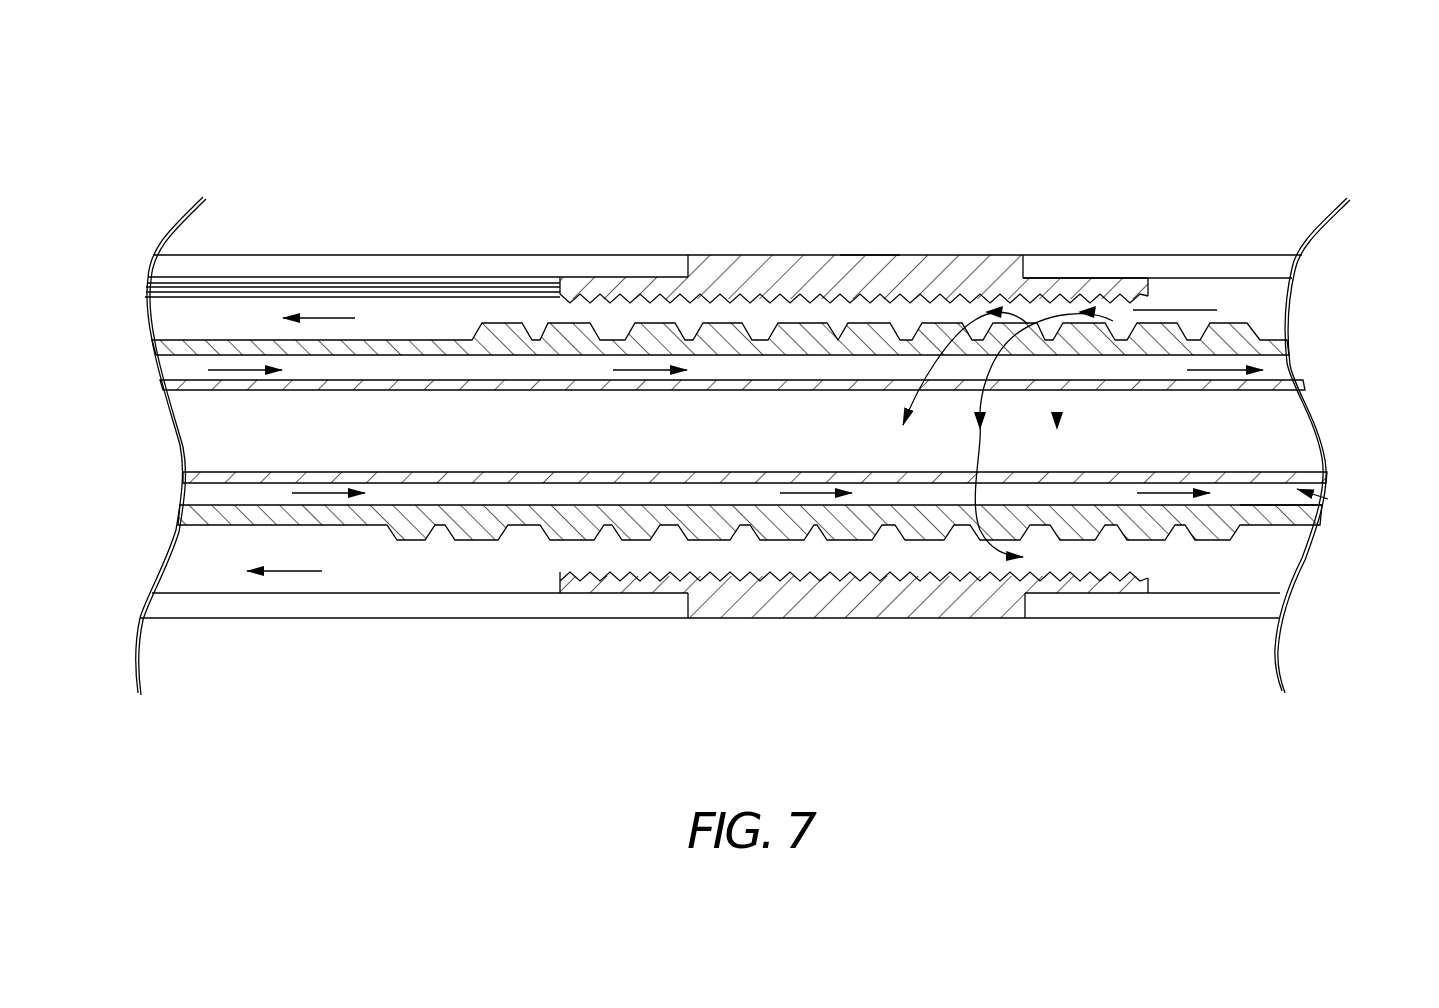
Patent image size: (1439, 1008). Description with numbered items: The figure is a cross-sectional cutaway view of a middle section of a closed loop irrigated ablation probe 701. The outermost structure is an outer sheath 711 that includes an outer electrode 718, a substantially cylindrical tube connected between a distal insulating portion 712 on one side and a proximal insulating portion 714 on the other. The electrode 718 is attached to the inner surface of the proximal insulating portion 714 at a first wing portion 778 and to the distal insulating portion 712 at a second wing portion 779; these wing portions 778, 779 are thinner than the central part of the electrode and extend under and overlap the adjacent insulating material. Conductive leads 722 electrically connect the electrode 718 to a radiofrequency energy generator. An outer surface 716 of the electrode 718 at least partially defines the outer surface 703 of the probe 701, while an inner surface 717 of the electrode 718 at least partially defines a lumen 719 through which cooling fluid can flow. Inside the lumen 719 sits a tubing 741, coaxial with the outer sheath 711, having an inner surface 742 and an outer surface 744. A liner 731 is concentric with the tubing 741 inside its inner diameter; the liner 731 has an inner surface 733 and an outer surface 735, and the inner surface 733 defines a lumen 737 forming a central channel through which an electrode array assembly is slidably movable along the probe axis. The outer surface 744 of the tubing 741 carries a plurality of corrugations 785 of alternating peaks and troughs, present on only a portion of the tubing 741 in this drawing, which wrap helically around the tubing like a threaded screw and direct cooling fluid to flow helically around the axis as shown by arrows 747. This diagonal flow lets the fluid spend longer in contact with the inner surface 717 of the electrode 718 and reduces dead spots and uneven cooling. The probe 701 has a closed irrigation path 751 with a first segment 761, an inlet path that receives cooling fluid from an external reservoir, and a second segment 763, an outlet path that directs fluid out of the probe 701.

The ablation probe 701 is at (763, 155).
The outer surface 703 is at (700, 222).
The outer sheath 711 is at (492, 268).
The distal insulating portion 712 is at (1257, 267).
The proximal insulating portion 714 is at (327, 270).
The outer surface 716 is at (868, 253).
The inner surface 717 is at (822, 302).
The outer electrode 718 is at (955, 270).
The lumen 719 is at (407, 318).
The conductive leads 722 is at (242, 288).
The liner 731 is at (1268, 477).
The inner surface 733 is at (1317, 467).
The outer surface 735 is at (1312, 503).
The lumen 737 is at (1287, 417).
The tubing 741 is at (472, 530).
The inner surface 742 is at (561, 500).
The outer surface 744 is at (658, 538).
The arrows 747 is at (1107, 557).
The irrigation path 751 is at (544, 318).
The first segment 761 is at (325, 370).
The second segment 763 is at (180, 318).
The first wing portion 778 is at (640, 300).
The second wing portion 779 is at (1068, 290).
The corrugations 785 is at (778, 533).